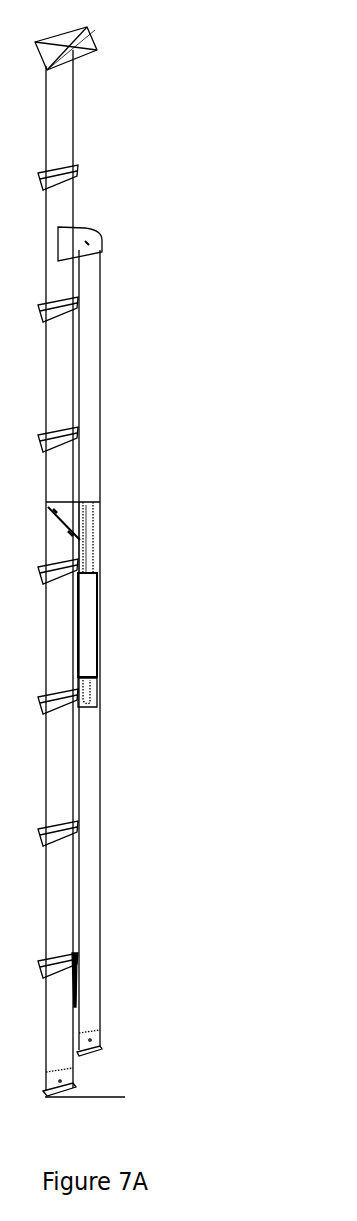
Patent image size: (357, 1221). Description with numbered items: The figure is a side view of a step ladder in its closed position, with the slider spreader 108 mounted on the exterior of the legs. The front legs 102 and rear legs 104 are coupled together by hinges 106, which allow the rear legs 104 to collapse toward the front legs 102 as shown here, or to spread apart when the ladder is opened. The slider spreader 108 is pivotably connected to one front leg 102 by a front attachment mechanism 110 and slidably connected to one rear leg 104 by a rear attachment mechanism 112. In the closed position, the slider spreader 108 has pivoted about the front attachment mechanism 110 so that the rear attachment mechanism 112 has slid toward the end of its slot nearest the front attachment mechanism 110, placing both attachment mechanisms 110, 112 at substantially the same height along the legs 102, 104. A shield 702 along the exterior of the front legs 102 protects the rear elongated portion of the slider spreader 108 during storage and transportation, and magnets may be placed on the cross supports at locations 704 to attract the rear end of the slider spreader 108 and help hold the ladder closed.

The front legs 102 is at (68, 913).
The rear legs 104 is at (87, 977).
The hinges 106 is at (68, 235).
The slider spreader 108 is at (88, 543).
The front attachment mechanism 110 is at (58, 503).
The rear attachment mechanism 112 is at (90, 507).
The shield 702 is at (87, 610).
The locations 704 is at (88, 707).